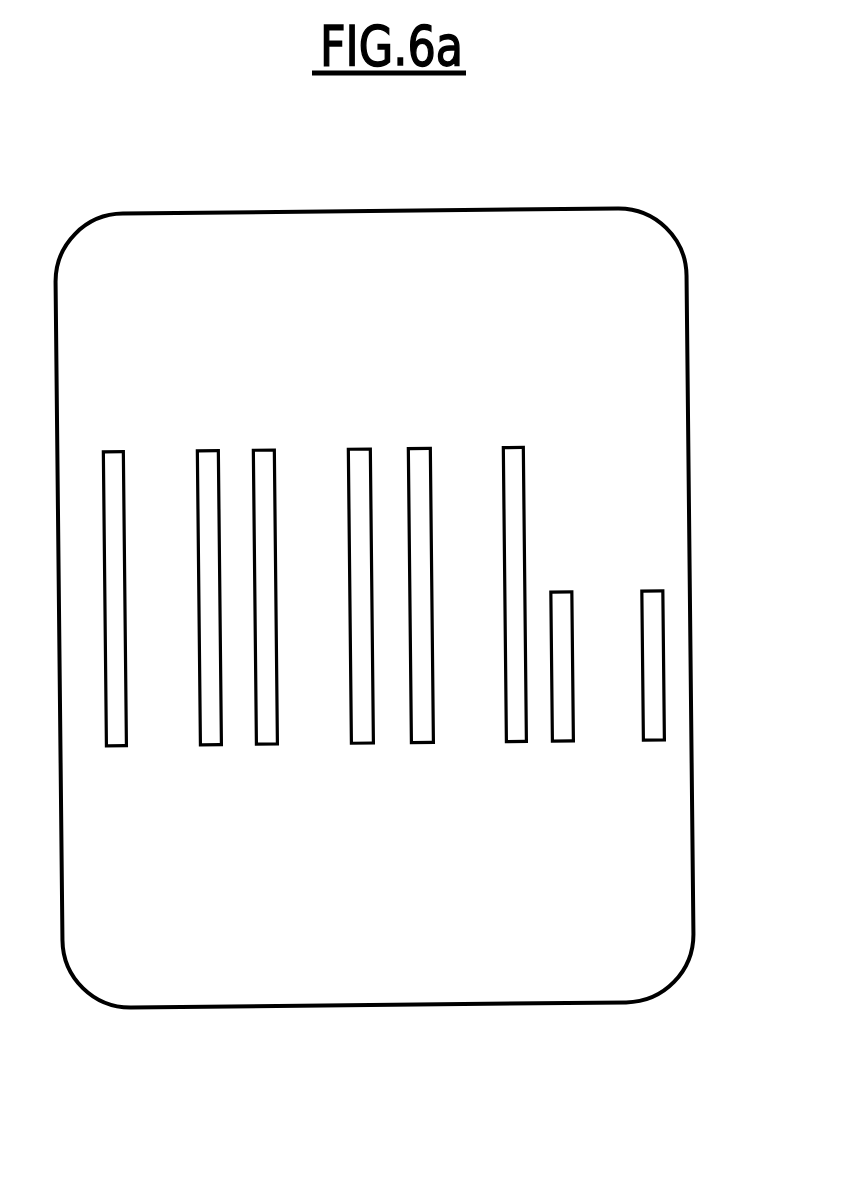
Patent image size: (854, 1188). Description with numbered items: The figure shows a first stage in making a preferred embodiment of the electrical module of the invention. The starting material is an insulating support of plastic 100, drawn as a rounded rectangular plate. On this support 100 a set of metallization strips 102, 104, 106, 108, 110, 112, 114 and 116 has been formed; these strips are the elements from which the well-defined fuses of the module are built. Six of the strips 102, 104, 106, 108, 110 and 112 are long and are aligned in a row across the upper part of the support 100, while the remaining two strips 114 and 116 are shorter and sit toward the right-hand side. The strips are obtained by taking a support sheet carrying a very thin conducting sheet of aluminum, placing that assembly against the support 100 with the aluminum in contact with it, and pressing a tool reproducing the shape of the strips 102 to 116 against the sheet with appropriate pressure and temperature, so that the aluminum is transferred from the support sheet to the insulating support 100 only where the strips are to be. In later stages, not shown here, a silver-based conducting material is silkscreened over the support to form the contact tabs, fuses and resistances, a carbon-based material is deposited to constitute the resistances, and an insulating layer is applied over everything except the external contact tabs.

The insulating support 100 is at (670, 857).
The metallization strip 102 is at (112, 466).
The metallization strip 104 is at (214, 466).
The metallization strip 106 is at (271, 466).
The metallization strip 108 is at (363, 466).
The metallization strip 110 is at (424, 466).
The metallization strip 112 is at (516, 466).
The metallization strip 114 is at (563, 611).
The metallization strip 116 is at (653, 611).